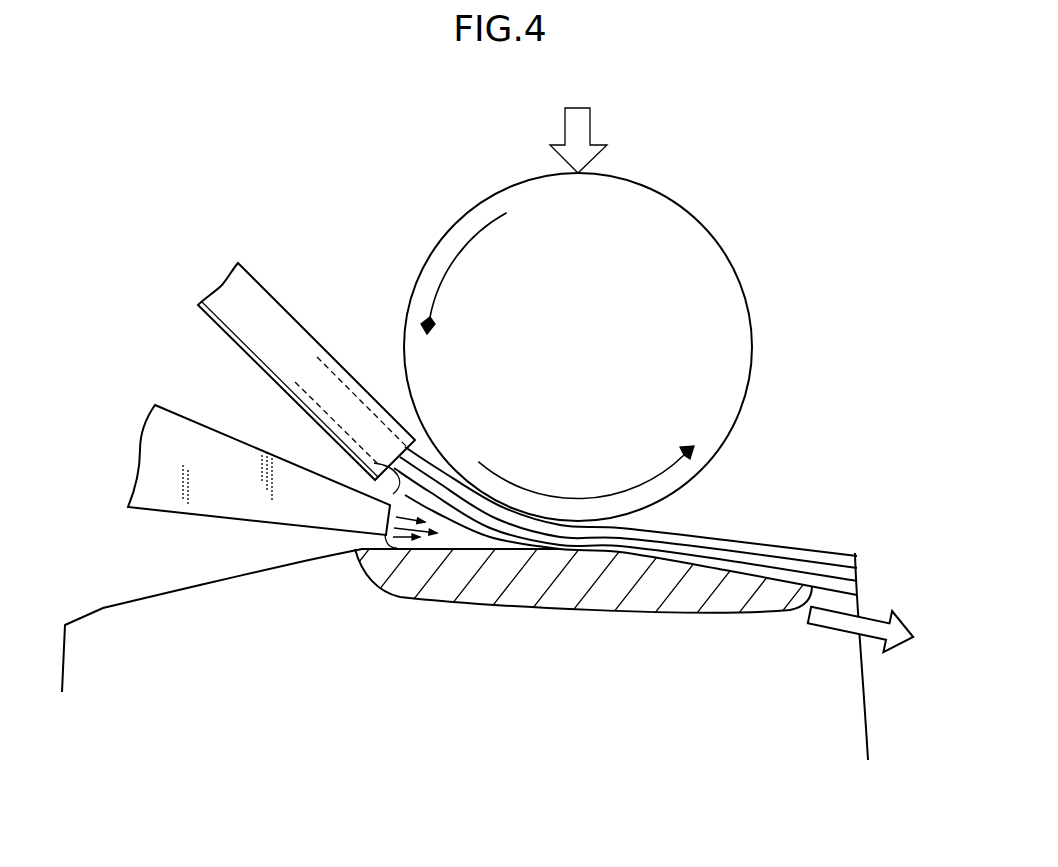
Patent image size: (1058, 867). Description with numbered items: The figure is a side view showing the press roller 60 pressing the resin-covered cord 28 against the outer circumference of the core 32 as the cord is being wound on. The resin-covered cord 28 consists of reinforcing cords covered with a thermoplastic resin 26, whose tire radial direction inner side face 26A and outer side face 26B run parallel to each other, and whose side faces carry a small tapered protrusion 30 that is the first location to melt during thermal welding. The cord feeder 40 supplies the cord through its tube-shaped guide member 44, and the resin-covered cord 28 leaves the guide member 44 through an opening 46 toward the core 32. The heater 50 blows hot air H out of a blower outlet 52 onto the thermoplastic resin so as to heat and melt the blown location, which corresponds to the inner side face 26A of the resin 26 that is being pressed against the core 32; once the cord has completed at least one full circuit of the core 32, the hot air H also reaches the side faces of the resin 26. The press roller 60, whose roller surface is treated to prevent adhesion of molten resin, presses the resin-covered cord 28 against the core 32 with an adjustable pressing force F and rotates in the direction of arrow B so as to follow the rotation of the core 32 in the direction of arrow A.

The thermoplastic resin 26 is at (625, 543).
The inner side face 26A is at (468, 530).
The outer side face 26B is at (703, 533).
The resin-covered cord 28 is at (845, 507).
The protrusion 30 is at (808, 557).
The core 32 is at (103, 607).
The cord feeder 40 is at (306, 337).
The guide member 44 is at (270, 290).
The opening 46 is at (372, 486).
The heater 50 is at (178, 410).
The blower outlet 52 is at (383, 545).
The press roller 60 is at (737, 272).
The pressing force F is at (590, 131).
The direction of rotation of the core A is at (870, 635).
The direction of rotation of the press roller B is at (567, 356).
The hot air H is at (403, 533).